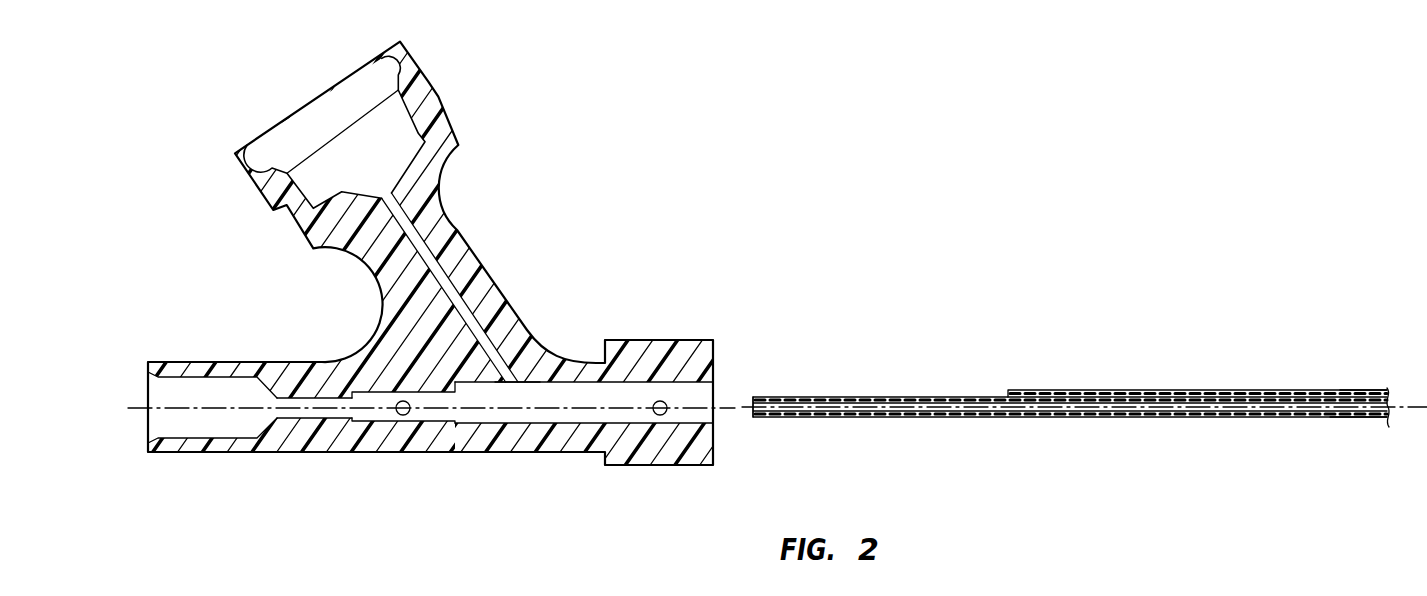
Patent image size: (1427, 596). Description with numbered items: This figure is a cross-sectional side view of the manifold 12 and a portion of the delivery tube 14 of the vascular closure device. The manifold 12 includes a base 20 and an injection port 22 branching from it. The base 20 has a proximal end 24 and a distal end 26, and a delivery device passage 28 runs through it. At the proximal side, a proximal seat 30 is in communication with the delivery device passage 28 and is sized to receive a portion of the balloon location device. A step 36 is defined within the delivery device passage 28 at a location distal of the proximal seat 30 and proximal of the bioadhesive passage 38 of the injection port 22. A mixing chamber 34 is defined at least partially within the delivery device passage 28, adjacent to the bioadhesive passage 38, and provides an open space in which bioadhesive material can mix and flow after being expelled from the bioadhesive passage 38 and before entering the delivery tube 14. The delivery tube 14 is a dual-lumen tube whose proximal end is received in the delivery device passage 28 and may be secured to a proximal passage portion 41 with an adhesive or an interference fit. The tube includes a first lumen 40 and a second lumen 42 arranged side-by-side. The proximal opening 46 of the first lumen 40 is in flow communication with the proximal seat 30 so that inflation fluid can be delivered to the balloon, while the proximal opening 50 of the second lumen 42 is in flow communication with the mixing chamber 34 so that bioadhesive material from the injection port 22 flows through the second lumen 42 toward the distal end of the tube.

The manifold 12 is at (588, 249).
The delivery tube 14 is at (1252, 372).
The base 20 is at (394, 452).
The injection port 22 is at (438, 74).
The proximal end 24 is at (151, 454).
The distal end 26 is at (693, 466).
The delivery device passage 28 is at (510, 424).
The proximal seat 30 is at (227, 421).
The mixing chamber 34 is at (530, 380).
The step 36 is at (450, 385).
The bioadhesive passage 38 is at (446, 273).
The first lumen 40 is at (1361, 419).
The proximal passage portion 41 is at (367, 419).
The second lumen 42 is at (1362, 389).
The proximal opening 46 is at (757, 419).
The proximal opening 50 is at (1011, 390).